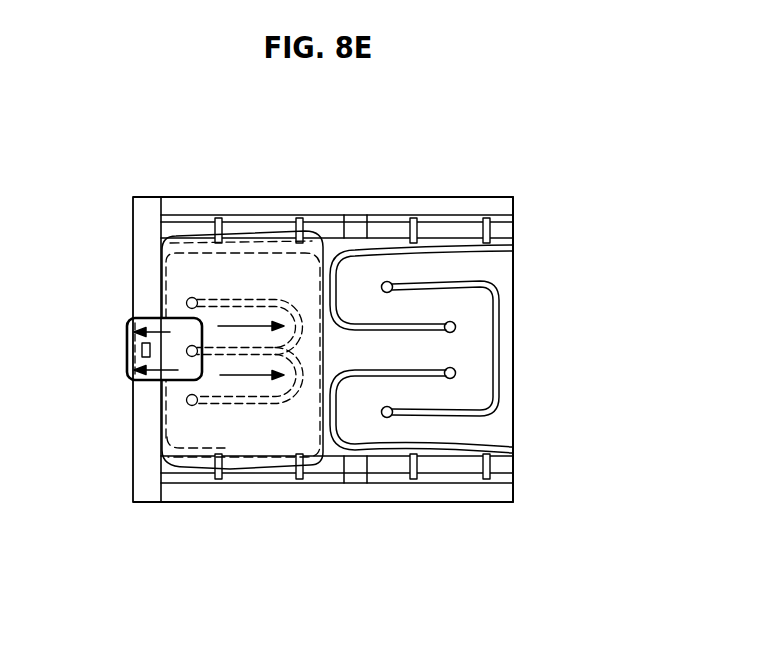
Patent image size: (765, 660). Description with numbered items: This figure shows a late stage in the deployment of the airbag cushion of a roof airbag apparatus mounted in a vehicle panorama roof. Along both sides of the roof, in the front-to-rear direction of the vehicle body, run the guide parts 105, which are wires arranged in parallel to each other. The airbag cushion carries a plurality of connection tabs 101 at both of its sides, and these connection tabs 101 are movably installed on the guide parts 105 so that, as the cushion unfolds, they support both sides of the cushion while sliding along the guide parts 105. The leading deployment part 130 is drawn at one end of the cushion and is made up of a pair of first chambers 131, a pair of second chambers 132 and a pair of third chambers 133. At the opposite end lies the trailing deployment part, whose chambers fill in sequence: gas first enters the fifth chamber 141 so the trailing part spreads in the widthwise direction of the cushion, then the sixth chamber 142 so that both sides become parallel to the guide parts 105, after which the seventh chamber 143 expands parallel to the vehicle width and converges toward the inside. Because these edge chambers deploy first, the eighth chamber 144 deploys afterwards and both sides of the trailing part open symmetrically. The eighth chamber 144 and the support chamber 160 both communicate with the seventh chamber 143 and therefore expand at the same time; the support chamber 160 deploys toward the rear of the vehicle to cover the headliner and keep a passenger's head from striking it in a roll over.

The connection tabs 101 is at (490, 237).
The guide parts 105 is at (231, 240).
The leading deployment part 130 is at (349, 262).
The first chambers 131 is at (513, 330).
The second chambers 132 is at (412, 275).
The third chambers 133 is at (427, 303).
The fifth chamber 141 is at (313, 385).
The sixth chamber 142 is at (267, 437).
The seventh chamber 143 is at (182, 396).
The eighth chamber 144 is at (233, 360).
The support chamber 160 is at (170, 368).